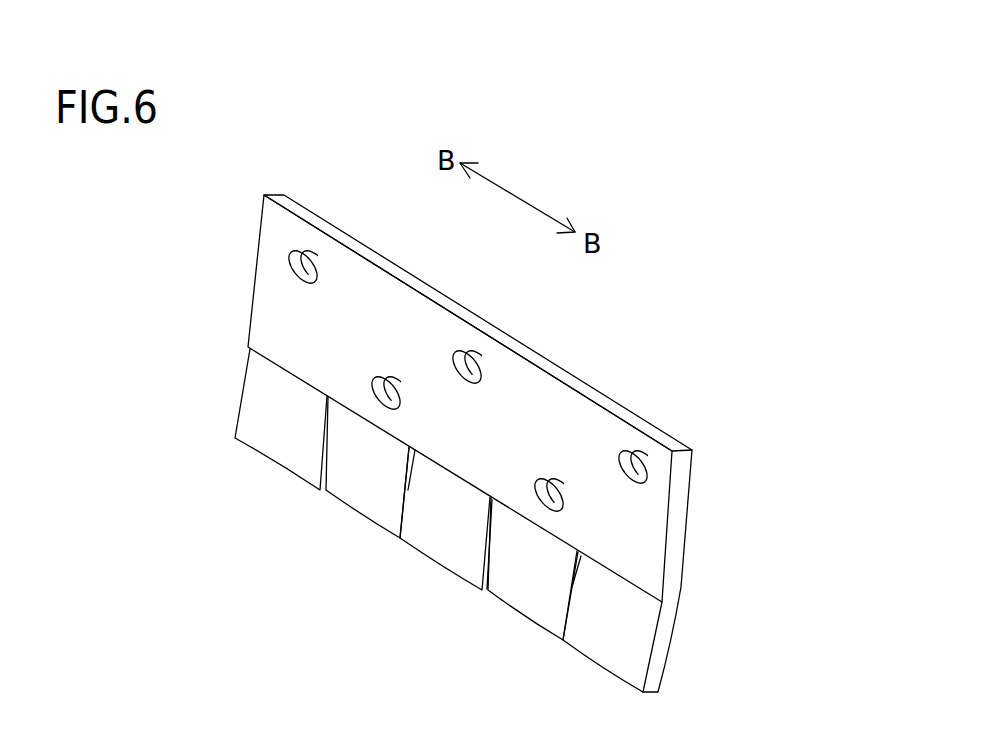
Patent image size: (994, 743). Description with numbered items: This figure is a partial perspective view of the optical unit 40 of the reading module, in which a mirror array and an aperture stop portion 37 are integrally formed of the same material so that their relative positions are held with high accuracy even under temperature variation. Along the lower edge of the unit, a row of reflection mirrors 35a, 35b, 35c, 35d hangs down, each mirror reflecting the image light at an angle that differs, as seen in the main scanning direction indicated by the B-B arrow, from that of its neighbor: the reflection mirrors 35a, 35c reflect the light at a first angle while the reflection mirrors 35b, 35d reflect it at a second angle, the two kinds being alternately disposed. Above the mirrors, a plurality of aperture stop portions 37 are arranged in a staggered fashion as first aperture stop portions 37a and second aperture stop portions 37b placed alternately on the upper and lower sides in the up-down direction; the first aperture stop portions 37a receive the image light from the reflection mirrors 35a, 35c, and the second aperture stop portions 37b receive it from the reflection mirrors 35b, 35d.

The optical unit 40 is at (478, 430).
The aperture stop portion 37 is at (480, 321).
The first aperture stop portion 37a is at (303, 265).
The second aperture stop portion 37b is at (549, 494).
The reflection mirror 35a is at (610, 625).
The reflection mirror 35b is at (530, 578).
The reflection mirror 35c is at (452, 527).
The reflection mirror 35d is at (368, 477).